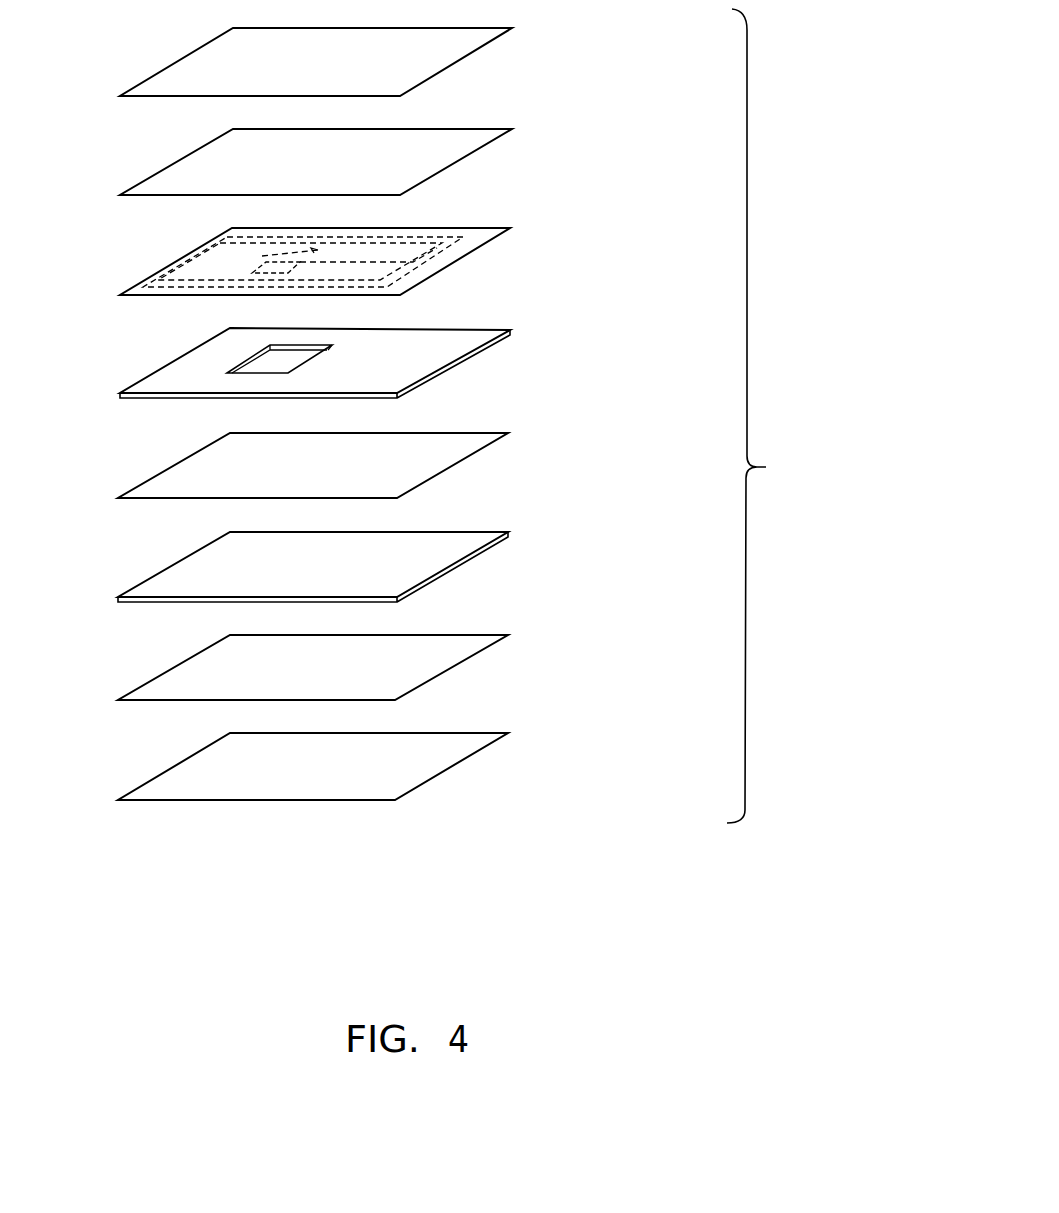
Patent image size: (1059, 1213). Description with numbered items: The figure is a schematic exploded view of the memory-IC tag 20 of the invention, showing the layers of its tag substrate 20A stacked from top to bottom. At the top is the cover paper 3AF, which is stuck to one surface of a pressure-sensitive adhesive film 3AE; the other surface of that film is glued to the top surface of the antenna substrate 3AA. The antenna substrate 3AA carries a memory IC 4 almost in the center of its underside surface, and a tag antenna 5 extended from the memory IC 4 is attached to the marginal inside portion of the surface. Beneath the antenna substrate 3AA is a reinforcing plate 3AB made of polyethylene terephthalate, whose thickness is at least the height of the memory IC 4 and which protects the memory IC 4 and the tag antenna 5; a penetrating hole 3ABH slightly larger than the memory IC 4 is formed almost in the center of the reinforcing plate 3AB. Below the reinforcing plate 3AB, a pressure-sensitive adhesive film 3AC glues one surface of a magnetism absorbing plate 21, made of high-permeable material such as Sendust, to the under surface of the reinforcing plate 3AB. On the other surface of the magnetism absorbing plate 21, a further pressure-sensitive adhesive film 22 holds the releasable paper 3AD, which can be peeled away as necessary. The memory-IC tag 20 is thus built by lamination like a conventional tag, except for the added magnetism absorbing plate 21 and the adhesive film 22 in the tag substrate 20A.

The cover paper 3AF is at (464, 57).
The pressure-sensitive adhesive film 3AE is at (471, 153).
The antenna substrate 3AA is at (470, 252).
The tag antenna 5 is at (430, 278).
The memory IC 4 is at (230, 241).
The reinforcing plate 3AB is at (455, 364).
The penetrating hole 3ABH is at (267, 364).
The pressure-sensitive adhesive film 3AC is at (470, 455).
The magnetism absorbing plate 21 is at (462, 563).
The pressure-sensitive adhesive film 22 is at (465, 660).
The releasable paper 3AD is at (458, 765).
The tag substrate 20A is at (827, 416).
The memory-IC tag 20 is at (440, 900).